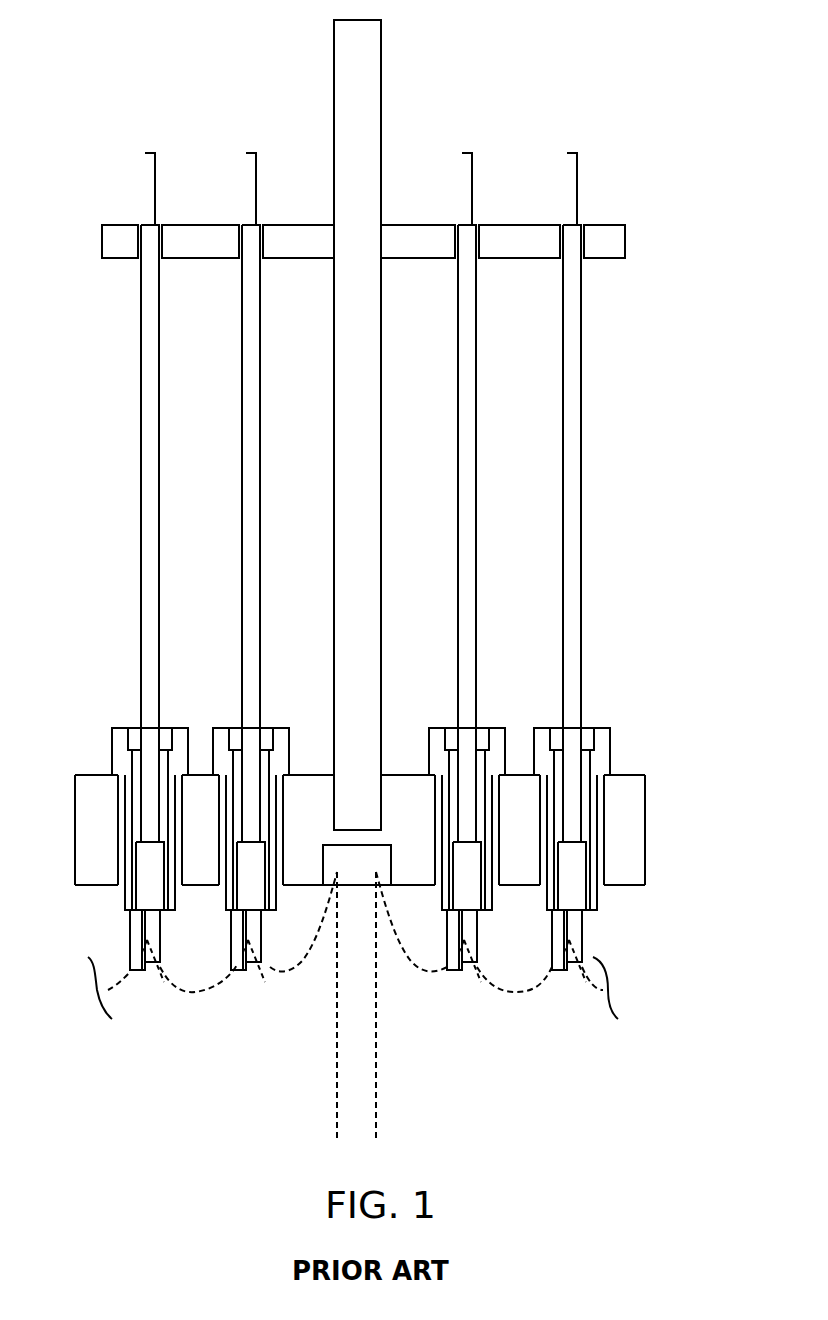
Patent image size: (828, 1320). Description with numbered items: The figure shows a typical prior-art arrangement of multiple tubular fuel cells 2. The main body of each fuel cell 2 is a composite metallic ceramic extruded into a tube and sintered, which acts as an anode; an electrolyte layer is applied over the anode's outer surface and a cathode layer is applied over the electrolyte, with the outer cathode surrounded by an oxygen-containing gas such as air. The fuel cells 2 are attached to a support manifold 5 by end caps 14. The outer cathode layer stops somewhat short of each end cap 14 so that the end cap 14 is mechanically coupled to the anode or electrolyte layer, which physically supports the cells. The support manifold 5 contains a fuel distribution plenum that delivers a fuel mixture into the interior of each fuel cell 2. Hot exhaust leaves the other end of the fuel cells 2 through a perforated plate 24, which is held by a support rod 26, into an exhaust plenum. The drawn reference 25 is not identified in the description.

The tubular fuel cell 2 is at (379, 581).
The support manifold 5 is at (645, 808).
The end cap 14 is at (612, 912).
The perforated plate 24 is at (410, 235).
The piston rod 25 is at (137, 225).
The support rod 26 is at (381, 58).